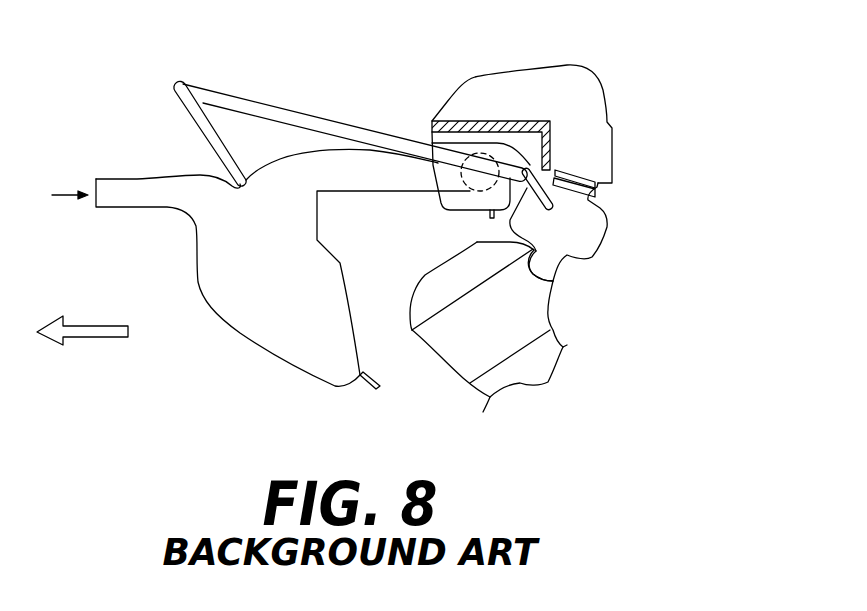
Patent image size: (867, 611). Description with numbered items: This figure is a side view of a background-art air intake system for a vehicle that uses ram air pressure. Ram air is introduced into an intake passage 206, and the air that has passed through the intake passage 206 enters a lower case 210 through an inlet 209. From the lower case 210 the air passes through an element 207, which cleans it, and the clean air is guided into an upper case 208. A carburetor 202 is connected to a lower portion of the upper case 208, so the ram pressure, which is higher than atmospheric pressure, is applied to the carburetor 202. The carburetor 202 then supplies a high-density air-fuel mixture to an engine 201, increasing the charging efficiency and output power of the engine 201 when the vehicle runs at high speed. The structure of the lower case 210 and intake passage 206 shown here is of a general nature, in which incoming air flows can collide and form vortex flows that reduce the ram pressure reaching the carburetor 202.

The engine 201 is at (513, 337).
The carburetor 202 is at (588, 222).
The intake passage 206 is at (290, 340).
The element 207 is at (460, 110).
The upper case 208 is at (600, 72).
The inlet 209 is at (467, 182).
The lower case 210 is at (612, 163).